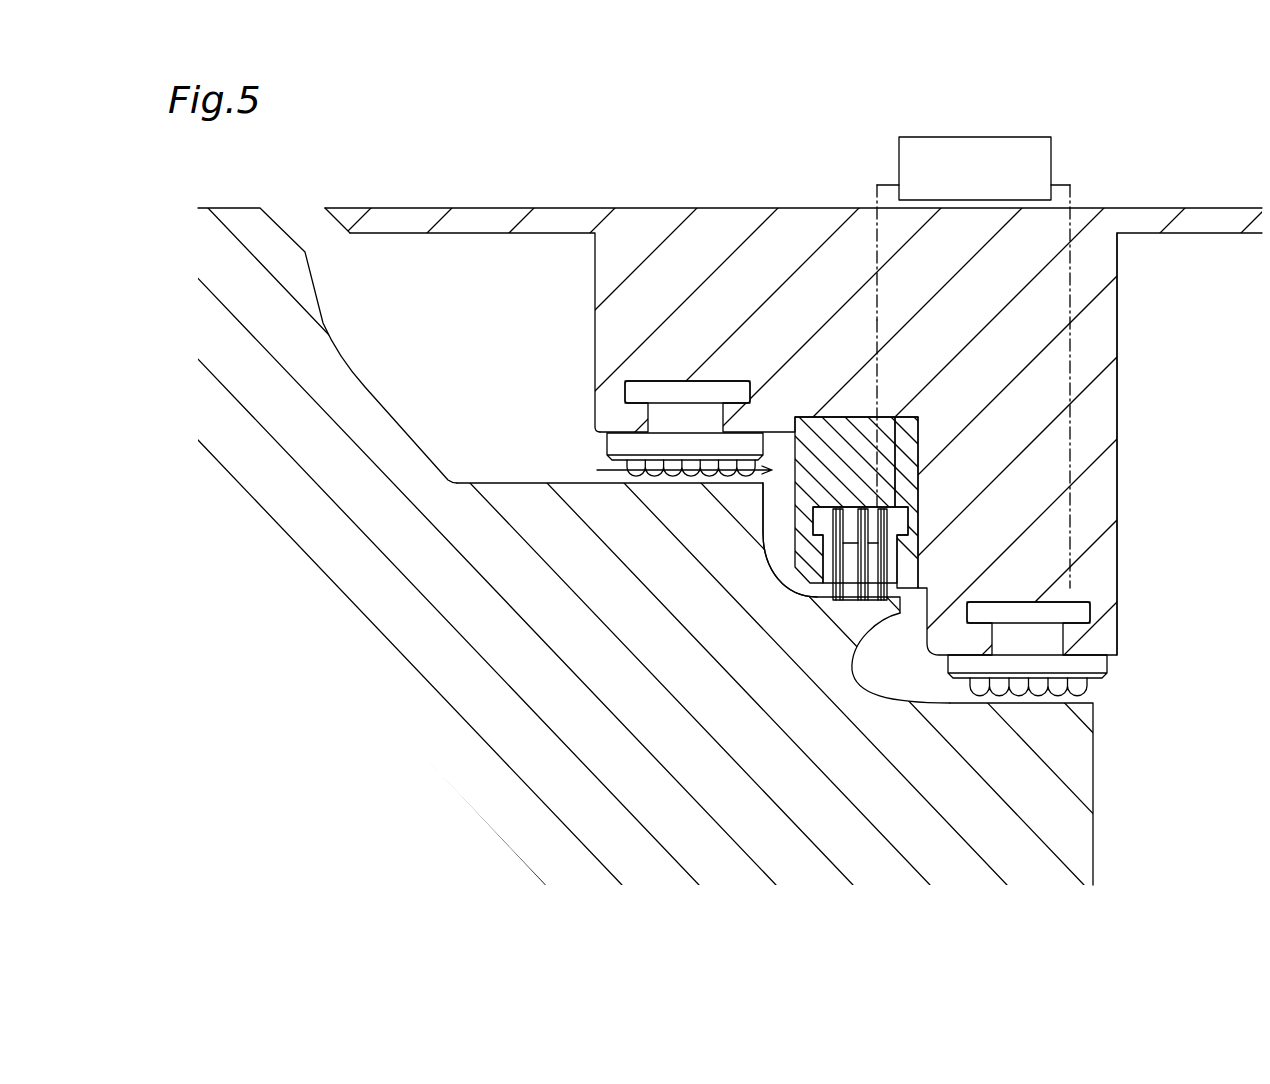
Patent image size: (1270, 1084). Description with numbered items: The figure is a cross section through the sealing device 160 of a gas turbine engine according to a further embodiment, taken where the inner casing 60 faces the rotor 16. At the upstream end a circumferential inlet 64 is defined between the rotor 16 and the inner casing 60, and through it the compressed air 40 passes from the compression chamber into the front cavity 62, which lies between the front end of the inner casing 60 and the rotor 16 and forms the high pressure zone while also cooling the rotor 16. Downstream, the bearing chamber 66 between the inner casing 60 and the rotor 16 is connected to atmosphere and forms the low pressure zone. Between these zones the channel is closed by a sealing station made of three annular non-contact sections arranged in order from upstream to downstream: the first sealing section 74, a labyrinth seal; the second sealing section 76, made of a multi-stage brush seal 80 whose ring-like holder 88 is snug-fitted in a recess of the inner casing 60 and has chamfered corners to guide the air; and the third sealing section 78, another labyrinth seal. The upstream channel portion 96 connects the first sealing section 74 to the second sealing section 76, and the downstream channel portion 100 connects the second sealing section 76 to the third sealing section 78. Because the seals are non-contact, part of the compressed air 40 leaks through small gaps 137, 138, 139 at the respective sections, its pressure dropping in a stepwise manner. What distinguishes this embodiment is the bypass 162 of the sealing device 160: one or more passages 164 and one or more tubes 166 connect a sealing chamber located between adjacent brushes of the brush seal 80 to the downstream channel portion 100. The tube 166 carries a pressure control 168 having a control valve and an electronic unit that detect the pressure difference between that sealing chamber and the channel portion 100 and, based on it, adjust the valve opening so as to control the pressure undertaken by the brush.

The rotor 16 is at (1080, 800).
The compressed air 40 is at (375, 264).
The inner casing 60 is at (1100, 272).
The front cavity 62 is at (397, 387).
The inlet 64 is at (288, 222).
The bearing chamber 66 is at (1201, 537).
The first sealing section 74 is at (658, 380).
The second sealing section 76 is at (848, 417).
The third sealing section 78 is at (1030, 600).
The brush seal 80 is at (837, 590).
The holder 88 is at (905, 453).
The upstream channel portion 96 is at (780, 506).
The downstream channel portion 100 is at (902, 682).
The gap 137 is at (658, 473).
The gap 138 is at (847, 580).
The gap 139 is at (1023, 688).
The sealing device 160 is at (1057, 136).
The bypass 162 is at (879, 291).
The passage 164 is at (878, 357).
The tube 166 is at (877, 185).
The pressure control 168 is at (1052, 168).